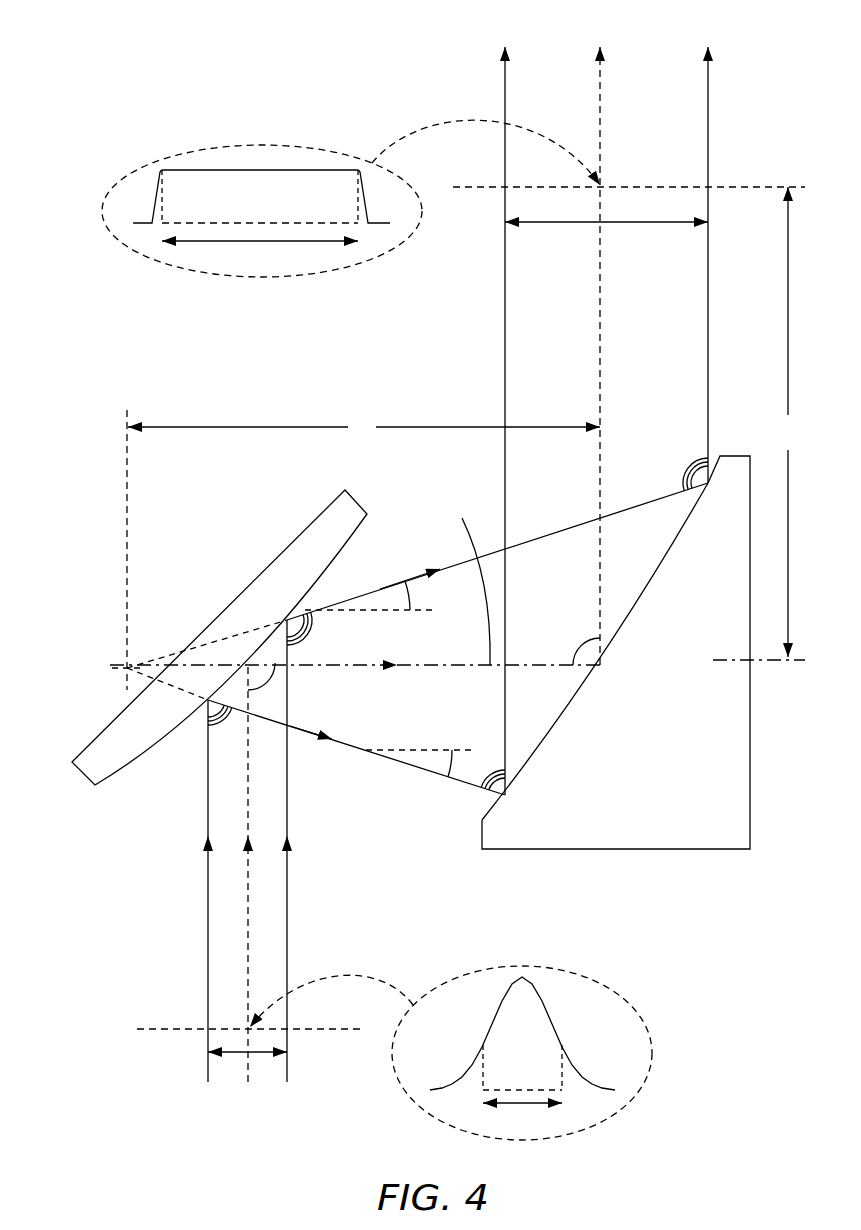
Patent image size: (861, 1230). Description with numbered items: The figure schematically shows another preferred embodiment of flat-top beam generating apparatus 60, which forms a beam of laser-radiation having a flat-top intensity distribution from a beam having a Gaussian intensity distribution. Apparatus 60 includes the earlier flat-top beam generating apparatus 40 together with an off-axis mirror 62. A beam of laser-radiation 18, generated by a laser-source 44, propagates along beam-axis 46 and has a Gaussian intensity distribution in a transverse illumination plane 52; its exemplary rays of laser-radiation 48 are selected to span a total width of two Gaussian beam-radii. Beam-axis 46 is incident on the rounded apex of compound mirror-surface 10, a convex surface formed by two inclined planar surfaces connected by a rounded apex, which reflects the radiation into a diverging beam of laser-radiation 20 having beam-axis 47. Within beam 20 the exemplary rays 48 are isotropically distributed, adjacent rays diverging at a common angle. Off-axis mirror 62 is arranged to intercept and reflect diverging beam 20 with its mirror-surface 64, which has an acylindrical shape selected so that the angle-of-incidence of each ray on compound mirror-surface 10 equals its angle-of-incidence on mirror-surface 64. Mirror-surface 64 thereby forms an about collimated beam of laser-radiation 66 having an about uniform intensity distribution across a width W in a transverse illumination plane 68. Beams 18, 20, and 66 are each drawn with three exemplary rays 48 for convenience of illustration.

The flat-top beam generating apparatus 60 is at (190, 100).
The transverse illumination plane 68 is at (758, 185).
The collimated beam of laser-radiation 66 is at (497, 303).
The flat-top beam generating apparatus 40 is at (107, 600).
The compound mirror-surface 10 is at (153, 752).
The beam of laser-radiation 20 is at (387, 582).
The beam-axis 47 is at (470, 534).
The beam-axis 46 is at (250, 755).
The beam of laser-radiation 18 is at (205, 955).
The exemplary rays of laser-radiation 48 is at (210, 918).
The transverse illumination plane 52 is at (153, 1031).
The laser-source 44 is at (249, 1115).
The acylindrical mirror-surface 64 is at (548, 742).
The off-axis mirror 62 is at (743, 820).